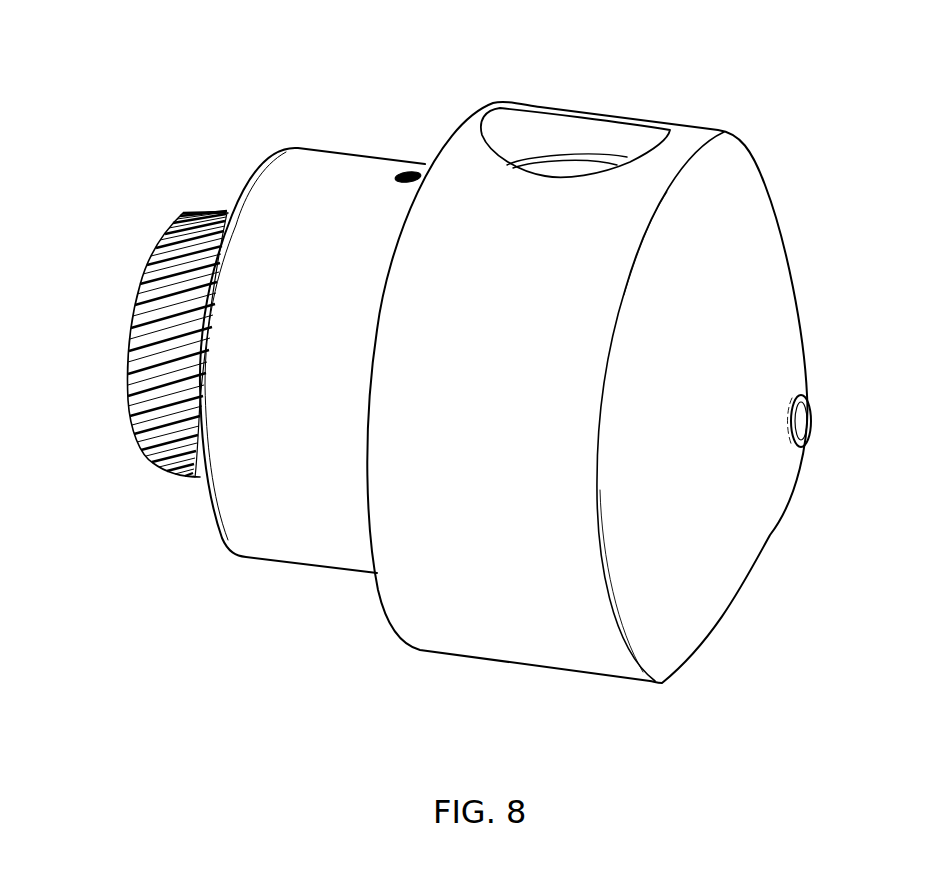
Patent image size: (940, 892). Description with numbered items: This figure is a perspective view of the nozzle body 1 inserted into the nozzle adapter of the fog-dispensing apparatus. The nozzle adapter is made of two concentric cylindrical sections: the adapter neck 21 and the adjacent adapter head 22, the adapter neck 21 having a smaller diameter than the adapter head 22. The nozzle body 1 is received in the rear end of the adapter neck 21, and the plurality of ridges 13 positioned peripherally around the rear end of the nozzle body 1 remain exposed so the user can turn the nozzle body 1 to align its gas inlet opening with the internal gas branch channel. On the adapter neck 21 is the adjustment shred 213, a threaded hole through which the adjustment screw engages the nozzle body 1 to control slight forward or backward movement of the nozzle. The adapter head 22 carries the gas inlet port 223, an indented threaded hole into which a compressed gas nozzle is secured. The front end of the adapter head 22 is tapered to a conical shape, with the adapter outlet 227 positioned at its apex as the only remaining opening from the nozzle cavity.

The nozzle body 1 is at (190, 195).
The plurality of ridges 13 is at (143, 268).
The adapter neck 21 is at (323, 540).
The adjustment shred 213 is at (409, 173).
The adapter head 22 is at (708, 542).
The gas inlet port 223 is at (563, 117).
The adapter outlet 227 is at (806, 420).